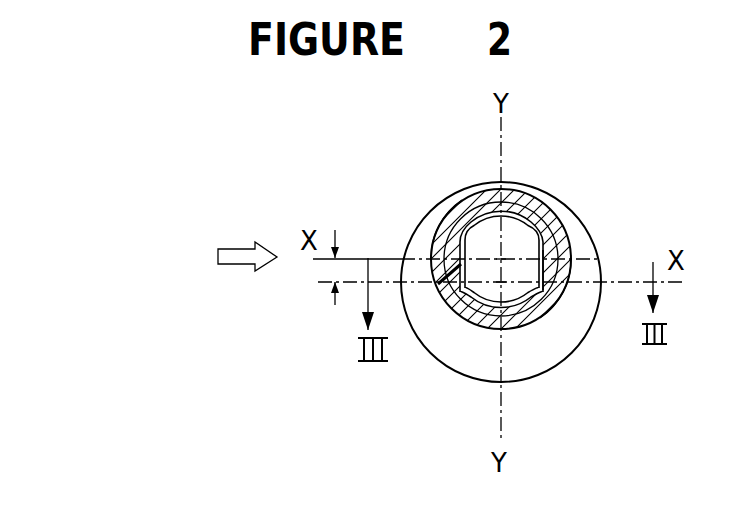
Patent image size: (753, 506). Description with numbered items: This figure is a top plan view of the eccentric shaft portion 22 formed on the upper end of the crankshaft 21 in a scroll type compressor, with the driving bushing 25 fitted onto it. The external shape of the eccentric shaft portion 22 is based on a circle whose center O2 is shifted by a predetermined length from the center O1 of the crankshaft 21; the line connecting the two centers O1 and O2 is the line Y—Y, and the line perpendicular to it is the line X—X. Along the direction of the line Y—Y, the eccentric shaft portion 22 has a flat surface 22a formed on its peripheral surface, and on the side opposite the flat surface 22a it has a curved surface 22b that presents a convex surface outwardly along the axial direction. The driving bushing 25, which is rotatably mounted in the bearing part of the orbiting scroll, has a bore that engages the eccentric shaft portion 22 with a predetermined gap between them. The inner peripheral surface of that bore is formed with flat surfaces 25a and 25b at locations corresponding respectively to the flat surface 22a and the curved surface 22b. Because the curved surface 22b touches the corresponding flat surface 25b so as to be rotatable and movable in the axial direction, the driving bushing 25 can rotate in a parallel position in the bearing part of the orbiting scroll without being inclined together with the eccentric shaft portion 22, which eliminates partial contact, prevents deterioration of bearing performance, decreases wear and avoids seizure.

The crankshaft 21 is at (540, 353).
The eccentric shaft portion 22 is at (526, 210).
The flat surface 22a is at (563, 285).
The curved surface 22b is at (462, 246).
The driving bushing 25 is at (516, 236).
The flat surface 25a is at (547, 279).
The flat surface 25b is at (440, 282).
The center of the crankshaft O1 is at (497, 283).
The center of the eccentric shaft portion O2 is at (500, 258).